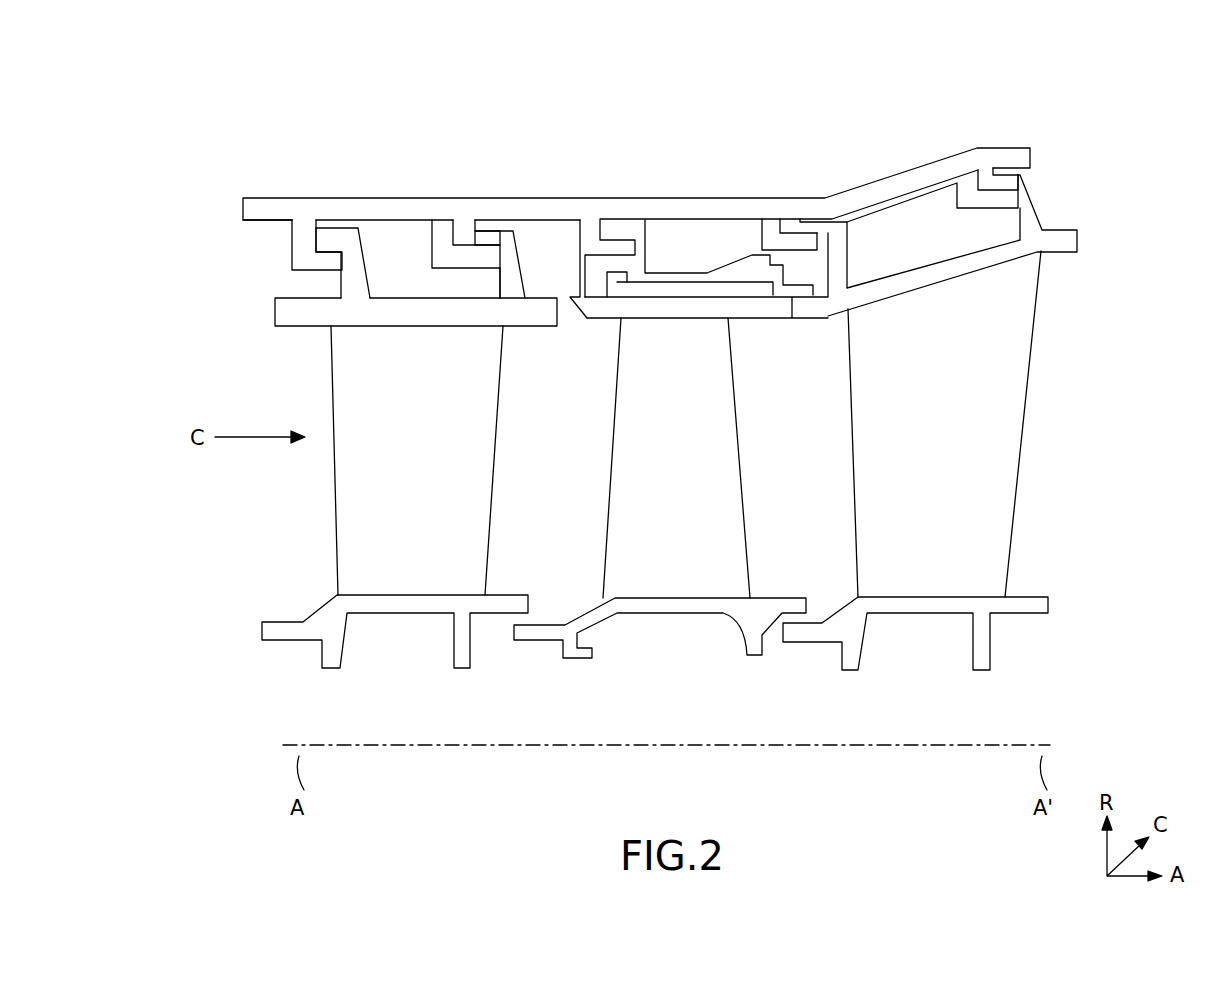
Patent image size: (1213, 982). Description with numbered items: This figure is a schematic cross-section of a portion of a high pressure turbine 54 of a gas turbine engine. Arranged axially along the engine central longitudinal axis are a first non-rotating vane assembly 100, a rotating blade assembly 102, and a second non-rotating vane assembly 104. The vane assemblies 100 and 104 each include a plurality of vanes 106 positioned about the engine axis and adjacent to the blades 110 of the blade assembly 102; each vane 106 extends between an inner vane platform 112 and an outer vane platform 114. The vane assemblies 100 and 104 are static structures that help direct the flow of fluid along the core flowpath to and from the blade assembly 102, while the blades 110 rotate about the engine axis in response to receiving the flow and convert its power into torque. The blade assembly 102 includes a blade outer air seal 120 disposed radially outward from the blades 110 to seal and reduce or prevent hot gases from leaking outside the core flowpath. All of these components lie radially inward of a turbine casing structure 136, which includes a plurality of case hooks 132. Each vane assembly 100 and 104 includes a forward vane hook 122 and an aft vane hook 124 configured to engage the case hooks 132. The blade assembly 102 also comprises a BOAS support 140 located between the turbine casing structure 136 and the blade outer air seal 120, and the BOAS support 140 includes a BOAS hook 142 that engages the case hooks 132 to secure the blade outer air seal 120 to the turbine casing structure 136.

The high pressure turbine 54 is at (390, 124).
The first vane assembly 100 is at (275, 248).
The blade assembly 102 is at (568, 245).
The second vane assembly 104 is at (880, 240).
The vane 106 is at (418, 470).
The blade 110 is at (681, 479).
The inner vane platform 112 is at (508, 598).
The outer vane platform 114 is at (383, 305).
The blade outer air seal 120 is at (738, 300).
The forward vane hook 122 is at (348, 235).
The aft vane hook 124 is at (490, 236).
The case hook 132 is at (303, 235).
The turbine casing structure 136 is at (668, 205).
The BOAS support 140 is at (670, 278).
The BOAS hook 142 is at (612, 225).